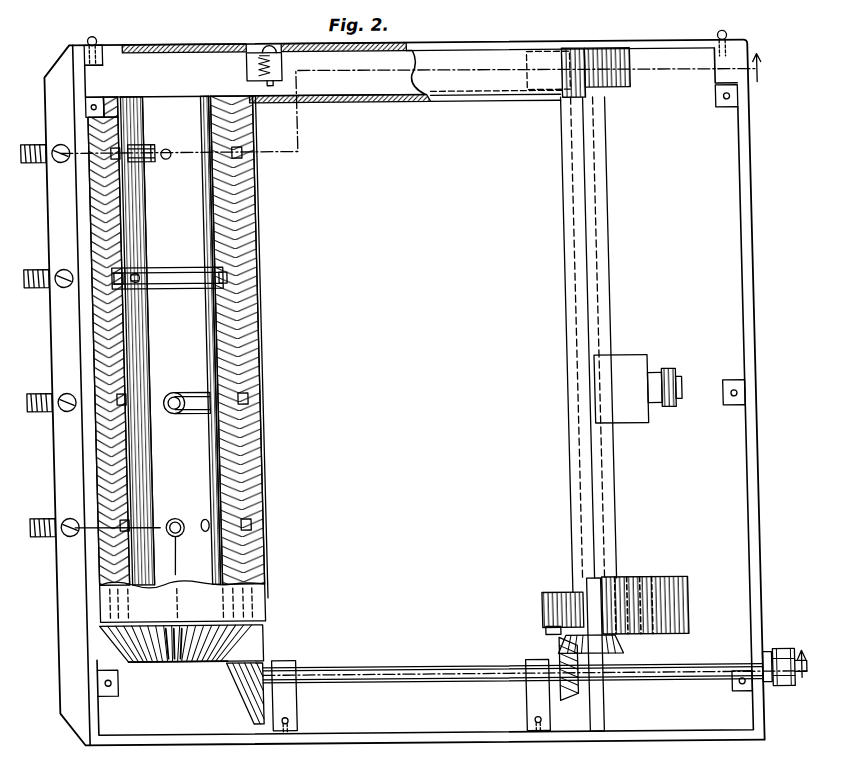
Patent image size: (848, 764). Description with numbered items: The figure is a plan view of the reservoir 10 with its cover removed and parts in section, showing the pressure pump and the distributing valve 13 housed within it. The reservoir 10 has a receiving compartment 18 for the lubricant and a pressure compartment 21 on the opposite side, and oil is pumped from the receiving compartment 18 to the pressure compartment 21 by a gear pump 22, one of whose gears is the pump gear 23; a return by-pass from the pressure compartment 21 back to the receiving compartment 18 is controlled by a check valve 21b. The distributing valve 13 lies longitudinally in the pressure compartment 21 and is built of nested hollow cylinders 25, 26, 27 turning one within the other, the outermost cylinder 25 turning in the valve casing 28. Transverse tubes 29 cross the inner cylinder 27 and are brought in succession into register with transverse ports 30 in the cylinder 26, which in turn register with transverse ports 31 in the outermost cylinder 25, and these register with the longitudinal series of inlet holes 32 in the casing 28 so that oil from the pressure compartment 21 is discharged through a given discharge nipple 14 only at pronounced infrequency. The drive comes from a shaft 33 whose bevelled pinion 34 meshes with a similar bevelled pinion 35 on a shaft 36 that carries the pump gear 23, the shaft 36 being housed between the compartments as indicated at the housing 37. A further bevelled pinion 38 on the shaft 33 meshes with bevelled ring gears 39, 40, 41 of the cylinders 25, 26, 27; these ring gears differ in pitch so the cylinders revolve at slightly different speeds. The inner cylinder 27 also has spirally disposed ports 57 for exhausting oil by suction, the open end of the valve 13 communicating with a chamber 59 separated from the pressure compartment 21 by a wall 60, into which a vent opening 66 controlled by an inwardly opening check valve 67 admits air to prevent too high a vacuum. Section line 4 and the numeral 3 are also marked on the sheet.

The adjusting nut 3 is at (790, 666).
The section line 4- 4 is at (424, 314).
The reservoir 10 is at (482, 52).
The distributing valve 13 is at (251, 611).
The discharge nipple 14 is at (38, 166).
The receiving compartment 18 is at (403, 387).
The pressure compartment 21 is at (419, 548).
The check valve 21b is at (668, 380).
The gear pump 22 is at (606, 594).
The pump gear 23 is at (528, 610).
The outermost cylinder 25 is at (251, 330).
The cylinder 26 is at (244, 354).
The inner cylinder 27 is at (228, 377).
The valve casing 28 is at (212, 394).
The transverse tubes 29 is at (152, 147).
The transverse ports 30 is at (253, 508).
The transverse ports 31 is at (88, 166).
The inlet holes 32 is at (251, 169).
The shaft 33 is at (674, 687).
The bevelled pinion 34 is at (555, 706).
The bevelled pinion 35 is at (606, 654).
The shaft 36 is at (566, 638).
The shaft housing 37 is at (603, 521).
The bevelled pinion 38 is at (250, 660).
The bevelled ring gear 39 is at (122, 627).
The bevelled ring gear 40 is at (136, 664).
The bevelled ring gear 41 is at (160, 665).
The ports 57 is at (164, 161).
The chamber 59 is at (254, 73).
The wall 60 is at (400, 106).
The vent opening 66 is at (268, 50).
The check valve 67 is at (245, 67).